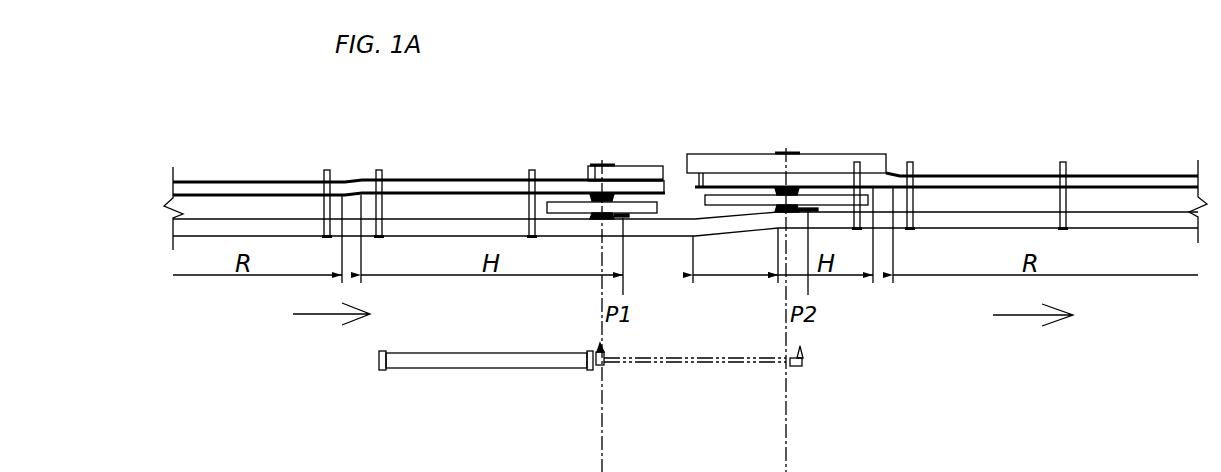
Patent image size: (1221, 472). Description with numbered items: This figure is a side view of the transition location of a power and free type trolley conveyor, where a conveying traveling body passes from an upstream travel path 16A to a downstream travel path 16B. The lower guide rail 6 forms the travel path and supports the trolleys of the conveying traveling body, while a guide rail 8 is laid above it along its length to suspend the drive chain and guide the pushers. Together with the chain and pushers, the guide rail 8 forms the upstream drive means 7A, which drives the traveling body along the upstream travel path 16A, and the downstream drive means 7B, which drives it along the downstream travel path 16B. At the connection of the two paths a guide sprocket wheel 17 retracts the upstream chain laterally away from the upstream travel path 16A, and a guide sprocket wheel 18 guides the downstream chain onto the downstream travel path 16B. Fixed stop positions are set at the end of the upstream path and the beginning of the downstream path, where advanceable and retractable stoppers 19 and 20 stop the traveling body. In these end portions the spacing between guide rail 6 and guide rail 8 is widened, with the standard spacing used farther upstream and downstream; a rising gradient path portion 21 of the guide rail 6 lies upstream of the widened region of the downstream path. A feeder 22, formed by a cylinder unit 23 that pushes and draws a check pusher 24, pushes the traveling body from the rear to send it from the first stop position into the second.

The guide rail 6 is at (415, 224).
The upstream drive means 7A is at (264, 180).
The downstream drive means 7B is at (1092, 174).
The guide rail 8 is at (453, 186).
The upstream travel path 16A is at (501, 212).
The downstream travel path 16B is at (1006, 208).
The guide sprocket wheel 17 is at (567, 204).
The guide sprocket wheel 18 is at (738, 200).
The stopper 19 is at (627, 214).
The stopper 20 is at (812, 208).
The rising gradient path portion 21 is at (735, 264).
The feeder 22 is at (486, 393).
The cylinder unit 23 is at (533, 364).
The check pusher 24 is at (604, 349).